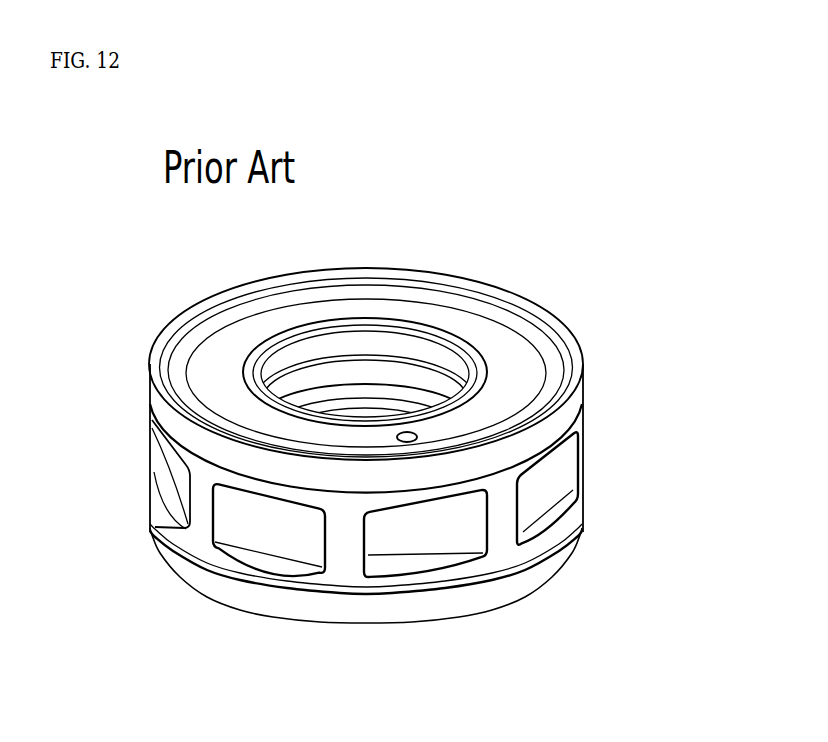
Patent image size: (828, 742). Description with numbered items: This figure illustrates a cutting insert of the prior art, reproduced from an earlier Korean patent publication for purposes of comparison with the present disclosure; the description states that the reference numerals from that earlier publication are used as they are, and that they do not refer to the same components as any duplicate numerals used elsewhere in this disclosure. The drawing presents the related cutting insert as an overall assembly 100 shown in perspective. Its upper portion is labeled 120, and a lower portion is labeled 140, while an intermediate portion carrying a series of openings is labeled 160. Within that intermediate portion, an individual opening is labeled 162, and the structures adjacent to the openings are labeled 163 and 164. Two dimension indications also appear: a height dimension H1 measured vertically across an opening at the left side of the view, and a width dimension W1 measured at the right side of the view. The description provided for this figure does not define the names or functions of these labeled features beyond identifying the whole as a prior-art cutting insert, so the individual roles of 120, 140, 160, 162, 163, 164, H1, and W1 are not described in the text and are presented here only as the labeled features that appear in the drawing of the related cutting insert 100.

The prior art diffuser assembly 100 is at (527, 208).
The upper ring body 120 is at (493, 332).
The lower flange ring 140 is at (233, 604).
The side band 160 is at (584, 458).
The window opening 162 is at (418, 536).
The rib between openings 163 is at (354, 537).
The connecting post 164 is at (493, 520).
The opening height H1 is at (213, 539).
The rib width W1 is at (583, 532).